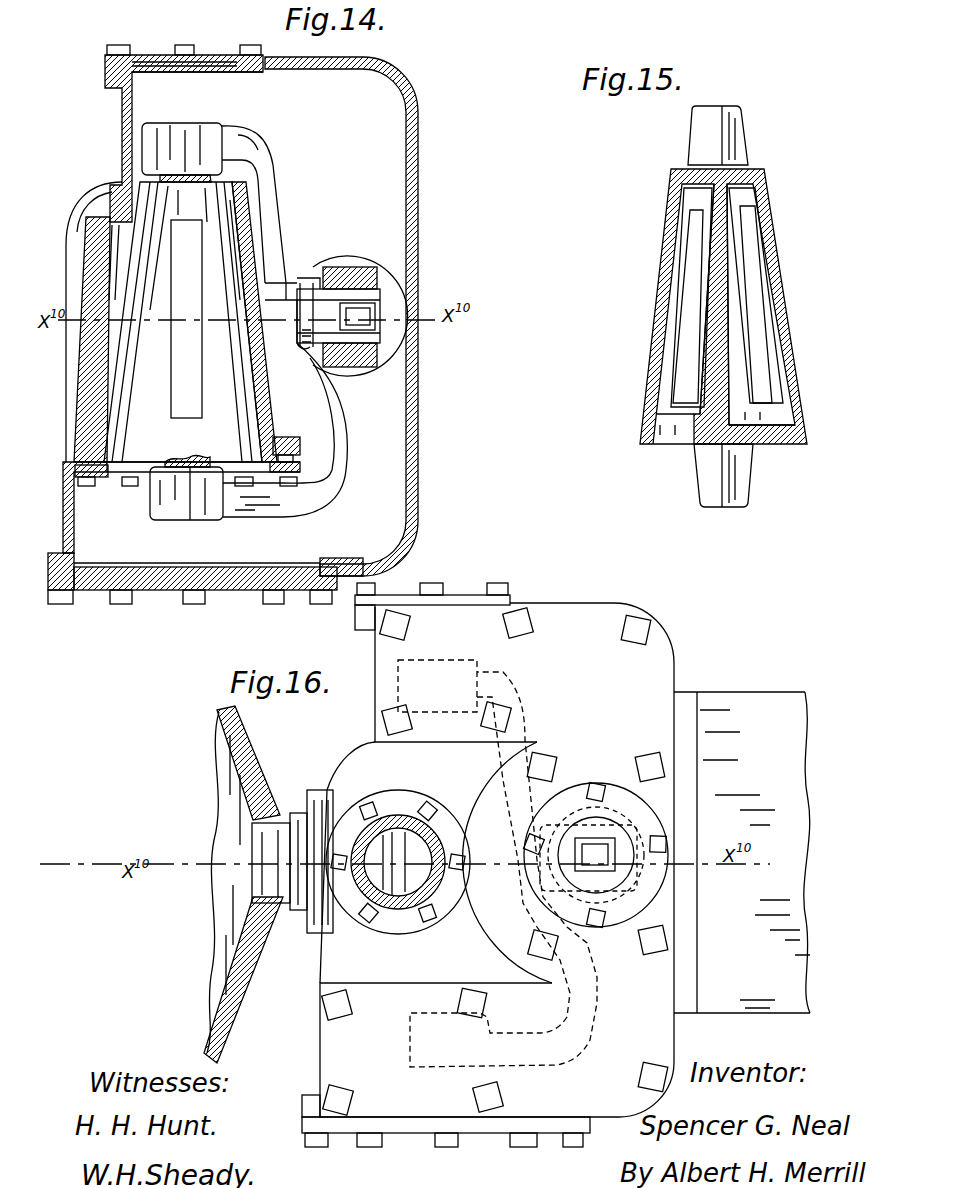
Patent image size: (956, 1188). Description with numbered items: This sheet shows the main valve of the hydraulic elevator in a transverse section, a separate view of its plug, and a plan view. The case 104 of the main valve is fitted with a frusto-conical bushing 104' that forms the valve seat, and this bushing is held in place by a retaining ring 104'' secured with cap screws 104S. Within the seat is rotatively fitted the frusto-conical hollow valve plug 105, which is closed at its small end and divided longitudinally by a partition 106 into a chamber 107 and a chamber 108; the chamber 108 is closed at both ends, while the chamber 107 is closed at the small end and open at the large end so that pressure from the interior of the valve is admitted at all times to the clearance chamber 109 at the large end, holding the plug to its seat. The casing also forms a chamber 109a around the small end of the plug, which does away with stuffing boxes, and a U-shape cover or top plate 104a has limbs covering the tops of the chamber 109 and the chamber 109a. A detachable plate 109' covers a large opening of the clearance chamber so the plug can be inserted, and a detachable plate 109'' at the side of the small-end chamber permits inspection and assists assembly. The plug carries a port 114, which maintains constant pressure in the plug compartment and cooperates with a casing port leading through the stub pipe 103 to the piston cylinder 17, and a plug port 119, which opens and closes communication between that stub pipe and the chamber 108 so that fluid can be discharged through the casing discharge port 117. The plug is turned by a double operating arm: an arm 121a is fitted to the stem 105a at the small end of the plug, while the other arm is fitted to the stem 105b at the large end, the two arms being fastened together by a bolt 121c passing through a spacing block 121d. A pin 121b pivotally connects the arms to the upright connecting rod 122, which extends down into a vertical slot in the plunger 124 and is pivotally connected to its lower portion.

In FIG. 14, the case 104 is at (276, 323).
In FIG. 16, the U-shape cover or top plate 104a is at (565, 860).
In FIG. 14, the frusto-conical bushing 104' is at (250, 322).
In FIG. 14, the retaining ring 104'' is at (241, 478).
In FIG. 14, the cap screws 104S is at (75, 462).
In FIG. 15, the valve plug 105 is at (653, 344).
In FIG. 14, the stem 105a is at (212, 178).
In FIG. 15, the stem 105a is at (690, 135).
In FIG. 14, the stem 105b is at (203, 465).
In FIG. 15, the stem 105b is at (751, 476).
In FIG. 15, the partition 106 is at (716, 284).
In FIG. 15, the chamber 107 is at (671, 418).
In FIG. 15, the chamber 108 is at (774, 410).
In FIG. 14, the clearance chamber 109 is at (197, 546).
In FIG. 14, the chamber 109a is at (197, 92).
In FIG. 14, the detachable plate 109' is at (192, 599).
In FIG. 16, the detachable plate 109' is at (446, 1136).
In FIG. 14, the detachable plate 109'' is at (184, 115).
In FIG. 16, the detachable plate 109'' is at (442, 592).
In FIG. 15, the port 114 is at (696, 238).
In FIG. 14, the discharge port 117 is at (192, 319).
In FIG. 15, the plug port 119 is at (751, 249).
In FIG. 14, the arm 121a is at (262, 150).
In FIG. 14, the pin 121b is at (305, 514).
In FIG. 14, the bolt 121c is at (312, 283).
In FIG. 14, the spacing block 121d is at (265, 292).
In FIG. 14, the connecting rod 122 is at (383, 310).
In FIG. 14, the plunger 124 is at (383, 287).
In FIG. 16, the stub pipe 103 is at (290, 915).
In FIG. 16, the piston cylinder 17 is at (260, 983).